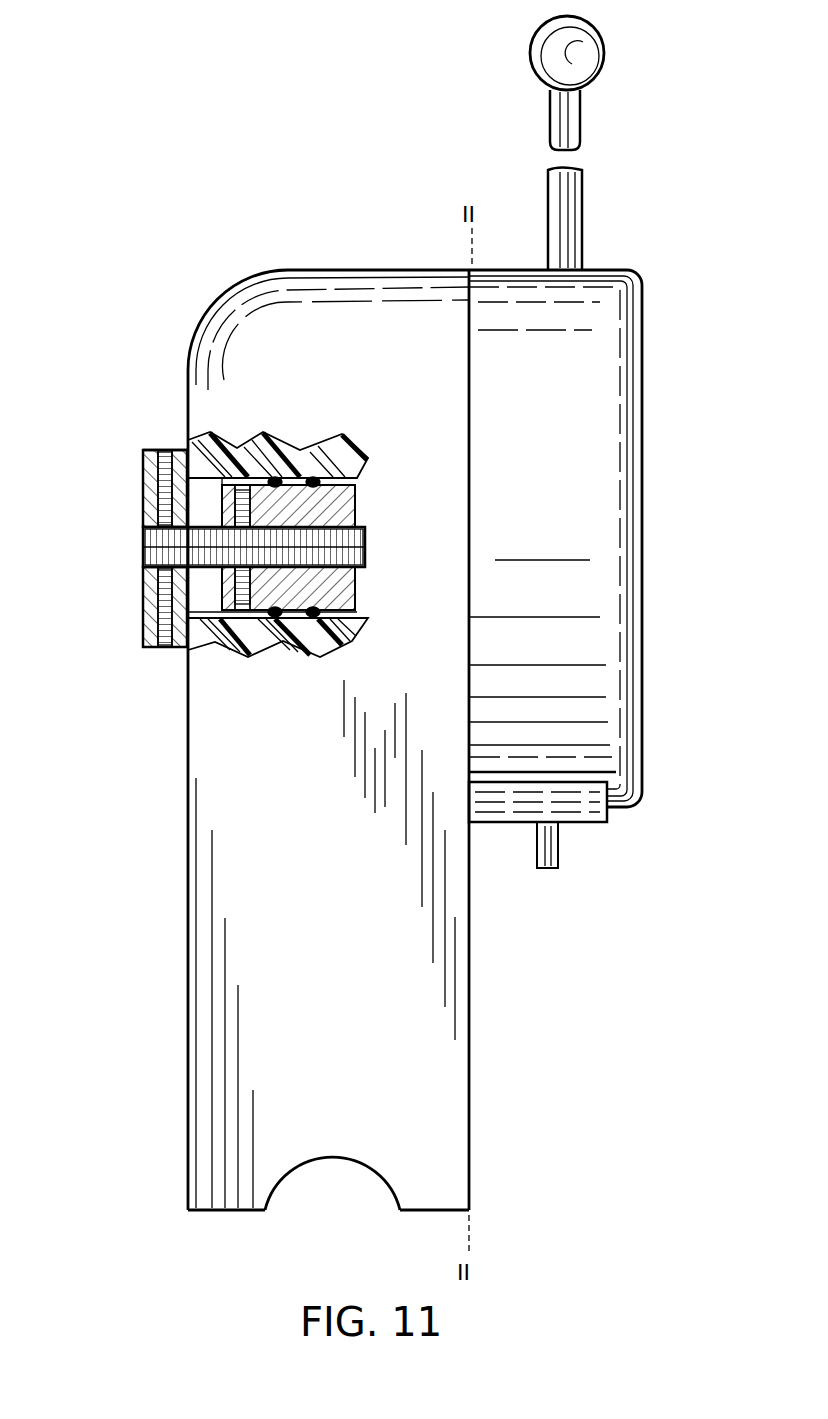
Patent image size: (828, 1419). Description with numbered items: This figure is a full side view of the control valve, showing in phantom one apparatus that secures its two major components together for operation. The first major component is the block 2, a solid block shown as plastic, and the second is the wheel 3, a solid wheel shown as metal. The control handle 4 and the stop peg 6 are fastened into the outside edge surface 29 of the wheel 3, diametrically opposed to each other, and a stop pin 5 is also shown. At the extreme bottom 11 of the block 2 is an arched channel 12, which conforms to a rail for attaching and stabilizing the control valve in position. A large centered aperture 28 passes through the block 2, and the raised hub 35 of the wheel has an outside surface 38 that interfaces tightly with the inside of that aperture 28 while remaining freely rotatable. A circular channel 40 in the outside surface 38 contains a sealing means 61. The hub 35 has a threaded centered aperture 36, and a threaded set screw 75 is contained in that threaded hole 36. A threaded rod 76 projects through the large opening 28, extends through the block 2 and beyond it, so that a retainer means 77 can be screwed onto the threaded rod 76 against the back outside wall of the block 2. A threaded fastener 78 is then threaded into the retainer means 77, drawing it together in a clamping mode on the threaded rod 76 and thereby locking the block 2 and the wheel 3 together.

The block 2 is at (328, 296).
The wheel 3 is at (614, 375).
The control handle 4 is at (583, 120).
The stop pin 5 is at (588, 803).
The stop peg 6 is at (548, 870).
The extreme bottom 11 is at (200, 1218).
The arched channel 12 is at (320, 1160).
The centered aperture 28 is at (205, 648).
The outside edge surface 29 is at (585, 498).
The raised hub 35 is at (235, 648).
The centered aperture 36 is at (300, 478).
The outside surface 38 is at (268, 650).
The circular channel 40 is at (355, 505).
The sealing means 61 is at (320, 615).
The threaded set screw 75 is at (245, 495).
The threaded rod 76 is at (150, 546).
The retainer means 77 is at (150, 485).
The threaded fastener 78 is at (167, 450).